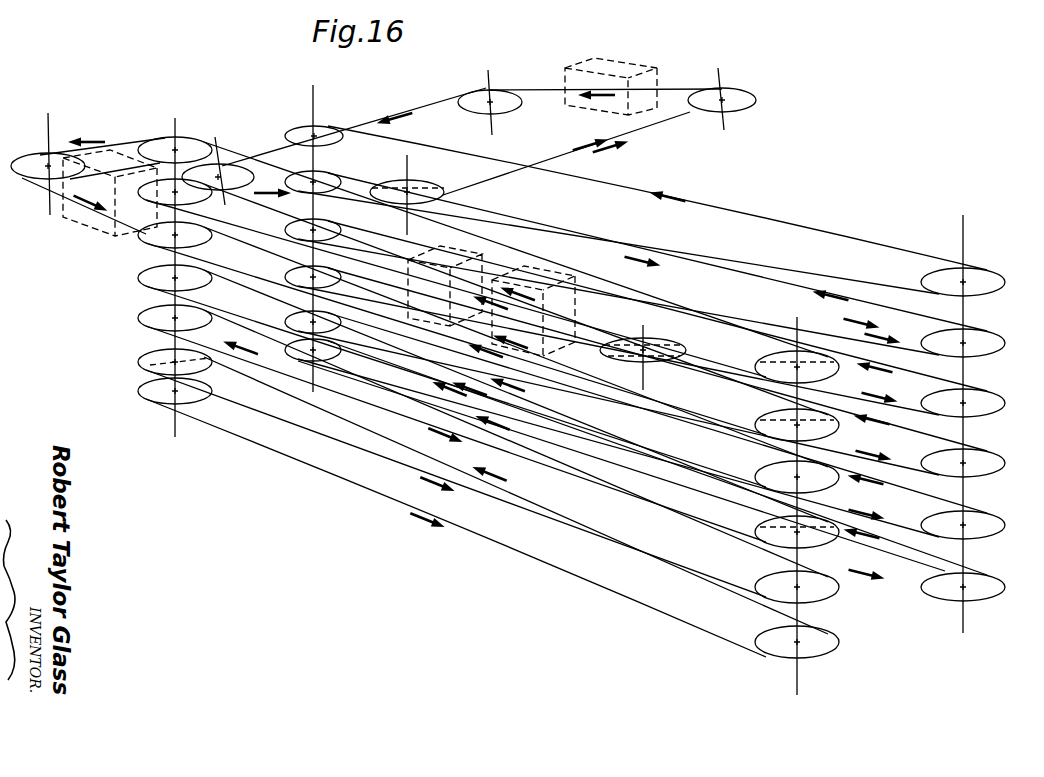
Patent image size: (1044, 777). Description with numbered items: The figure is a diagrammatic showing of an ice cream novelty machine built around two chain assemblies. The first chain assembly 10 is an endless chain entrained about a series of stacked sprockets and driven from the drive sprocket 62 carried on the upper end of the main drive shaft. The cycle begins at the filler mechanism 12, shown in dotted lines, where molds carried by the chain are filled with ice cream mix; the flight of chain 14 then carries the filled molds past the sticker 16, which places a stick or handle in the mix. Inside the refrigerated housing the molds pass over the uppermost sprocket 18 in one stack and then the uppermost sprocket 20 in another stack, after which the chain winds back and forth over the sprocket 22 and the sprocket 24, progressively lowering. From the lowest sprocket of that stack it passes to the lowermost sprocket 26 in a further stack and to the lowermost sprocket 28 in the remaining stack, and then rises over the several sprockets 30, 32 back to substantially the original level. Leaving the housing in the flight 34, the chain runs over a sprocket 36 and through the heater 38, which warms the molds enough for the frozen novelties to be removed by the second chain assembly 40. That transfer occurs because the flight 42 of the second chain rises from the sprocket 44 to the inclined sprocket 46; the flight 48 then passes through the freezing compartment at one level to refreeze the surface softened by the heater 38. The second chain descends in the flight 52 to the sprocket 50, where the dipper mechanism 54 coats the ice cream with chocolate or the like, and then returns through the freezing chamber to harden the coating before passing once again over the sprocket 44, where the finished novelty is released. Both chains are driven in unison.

The first chain assembly 10 is at (1005, 406).
The filler mechanism 12 is at (467, 254).
The flight of chain 14 is at (585, 353).
The sticker 16 is at (543, 276).
The uppermost sprocket 18 is at (968, 275).
The uppermost sprocket 20 is at (320, 133).
The sprocket 22 is at (980, 397).
The sprocket 24 is at (330, 226).
The lowermost sprocket 26 is at (183, 398).
The lowermost sprocket 28 is at (773, 648).
The sprockets 30 is at (150, 283).
The sprockets 32 is at (815, 540).
The flight 34 is at (115, 138).
The sprocket 36 is at (28, 160).
The heater 38 is at (118, 160).
The second chain assembly 40 is at (648, 141).
The flight 42 is at (268, 195).
The sprocket 44 is at (233, 172).
The sprocket 46 is at (414, 185).
The flight / sprocket 48 is at (742, 92).
The sprocket 50 is at (510, 98).
The flight 52 is at (550, 88).
The dipper mechanism 54 is at (616, 62).
The drive sprocket 62 is at (662, 340).